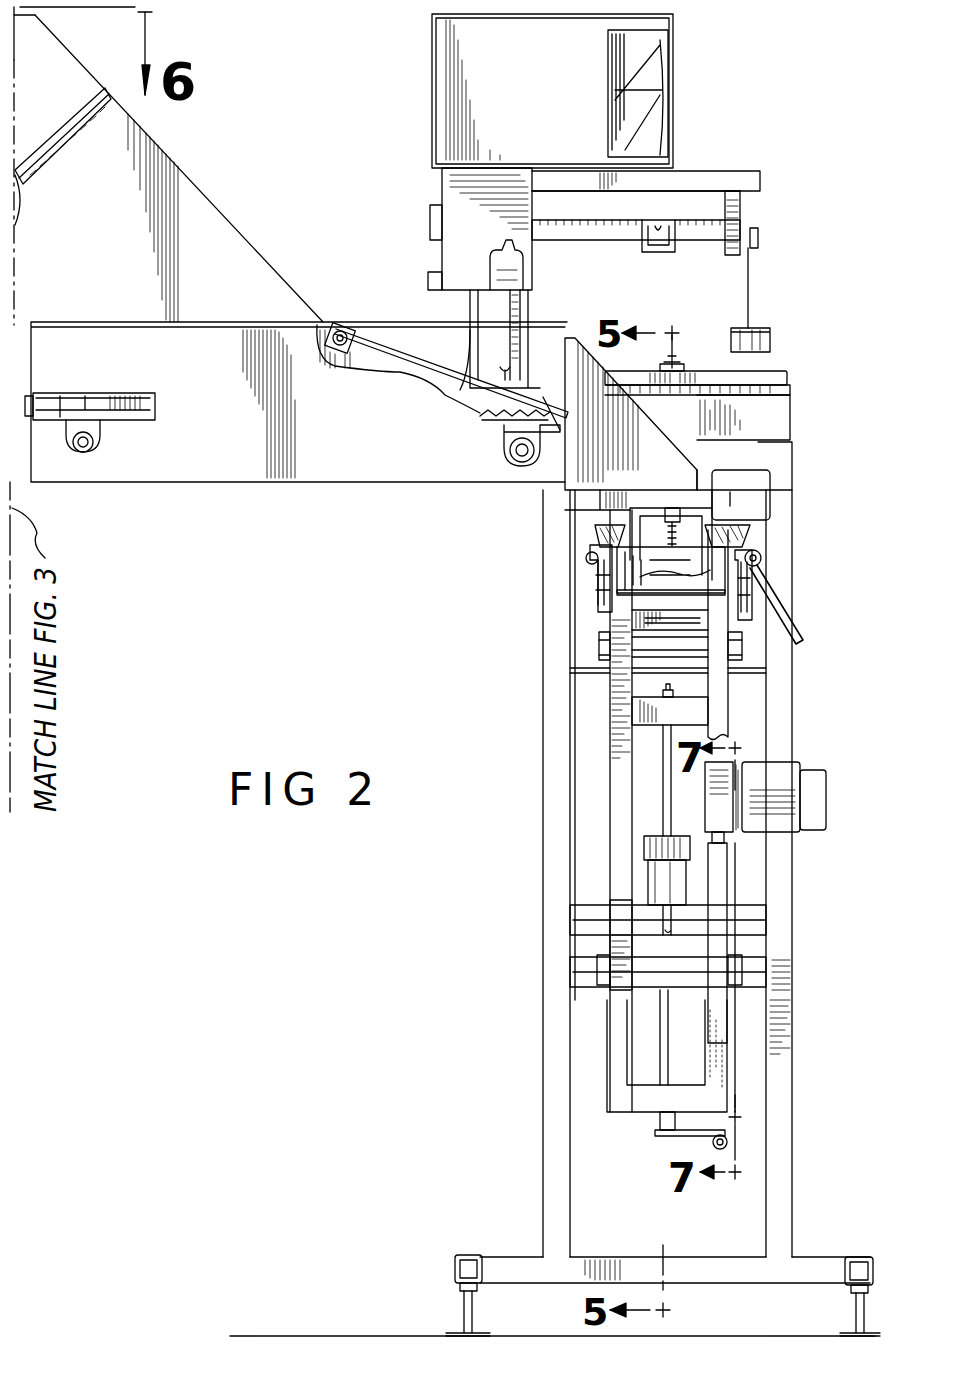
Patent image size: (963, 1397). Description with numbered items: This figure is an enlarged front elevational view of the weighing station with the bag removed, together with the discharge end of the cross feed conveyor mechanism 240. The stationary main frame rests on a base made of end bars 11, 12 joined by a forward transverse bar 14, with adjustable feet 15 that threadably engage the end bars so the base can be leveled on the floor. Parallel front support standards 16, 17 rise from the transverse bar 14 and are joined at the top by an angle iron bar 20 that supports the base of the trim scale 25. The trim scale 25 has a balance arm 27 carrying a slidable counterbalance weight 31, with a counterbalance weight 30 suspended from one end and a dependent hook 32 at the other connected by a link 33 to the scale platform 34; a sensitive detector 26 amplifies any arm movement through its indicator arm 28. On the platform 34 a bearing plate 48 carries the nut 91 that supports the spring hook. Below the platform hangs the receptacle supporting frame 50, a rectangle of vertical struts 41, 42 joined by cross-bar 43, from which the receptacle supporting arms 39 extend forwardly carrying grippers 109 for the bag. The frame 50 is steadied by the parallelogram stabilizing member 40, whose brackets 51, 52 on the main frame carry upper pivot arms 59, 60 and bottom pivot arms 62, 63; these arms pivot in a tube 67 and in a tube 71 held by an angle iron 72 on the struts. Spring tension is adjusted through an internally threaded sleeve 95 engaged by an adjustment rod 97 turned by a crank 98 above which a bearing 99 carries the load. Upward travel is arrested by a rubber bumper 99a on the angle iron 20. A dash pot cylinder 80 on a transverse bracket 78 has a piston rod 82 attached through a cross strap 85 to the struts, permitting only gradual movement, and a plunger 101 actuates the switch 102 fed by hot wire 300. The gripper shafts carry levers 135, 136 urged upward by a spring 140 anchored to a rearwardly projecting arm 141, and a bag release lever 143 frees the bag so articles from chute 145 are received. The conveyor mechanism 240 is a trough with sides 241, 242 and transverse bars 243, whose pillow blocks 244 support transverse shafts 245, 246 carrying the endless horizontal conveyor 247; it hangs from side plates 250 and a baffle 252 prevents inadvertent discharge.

The side plates 250 is at (192, 190).
The sensitive detector 26 is at (437, 60).
The indicator arm 28 is at (655, 88).
The trim scale 25 is at (440, 202).
The dependent hook 32 is at (497, 252).
The balance arm 27 is at (603, 240).
The slidable counterbalance weight 31 is at (668, 252).
The counterbalance weight 30 is at (755, 330).
The side 242 is at (342, 325).
The baffle 252 is at (372, 335).
The link 33 is at (502, 340).
The nut 91 is at (676, 355).
The bearing plate 48 is at (684, 366).
The scale platform 34 is at (762, 372).
The angle iron bar 20 is at (767, 448).
The transverse bars 243 is at (90, 406).
The transverse shaft 245 is at (92, 446).
The pillow blocks 244 is at (83, 446).
The cross feed conveyor mechanism 240 is at (320, 480).
The side 241 is at (345, 483).
The endless horizontal conveyor 247 is at (490, 426).
The transverse shaft 246 is at (510, 455).
The cross-bar 43 is at (600, 492).
The rearwardly projecting arm 141 is at (665, 498).
The rubber bumper 99a is at (745, 466).
The spring 140 is at (675, 550).
The lever 135 is at (725, 550).
The chute 145 is at (755, 543).
The receptacle supporting arms 39 is at (596, 563).
The gripper 109 is at (598, 576).
The lever 136 is at (620, 572).
The bag release lever 143 is at (790, 628).
The vertically moveable frame 50 is at (605, 616).
The upper pivot arm 59 is at (600, 652).
The bracket 51 is at (590, 670).
The tube 71 is at (690, 645).
The angle iron 72 is at (703, 622).
The upper pivot arm 60 is at (741, 650).
The strut 41 is at (613, 722).
The strut 42 is at (720, 738).
The cross strap 85 is at (650, 725).
The hot wire 300 is at (815, 772).
The piston rod 82 is at (660, 818).
The dash pot cylinder 80 is at (645, 865).
The switch 102 is at (723, 832).
The plunger 101 is at (728, 836).
The transverse bracket 78 is at (575, 913).
The internally threaded sleeve 95 is at (658, 934).
The parallelogram stabilizing member 40 is at (590, 966).
The bottom pivot arm 62 is at (597, 970).
The tube 67 is at (736, 974).
The bottom pivot arm 63 is at (743, 968).
The bracket 52 is at (605, 995).
The front support standard 16 is at (546, 1018).
The adjustment rod 97 is at (666, 1040).
The front support standard 17 is at (780, 1090).
The bearing 99 is at (660, 1130).
The crank 98 is at (680, 1135).
The forward end bar 11 is at (456, 1256).
The forward transverse bar 14 is at (640, 1262).
The rearward end bar 12 is at (852, 1258).
The adjustable feet 15 is at (465, 1310).